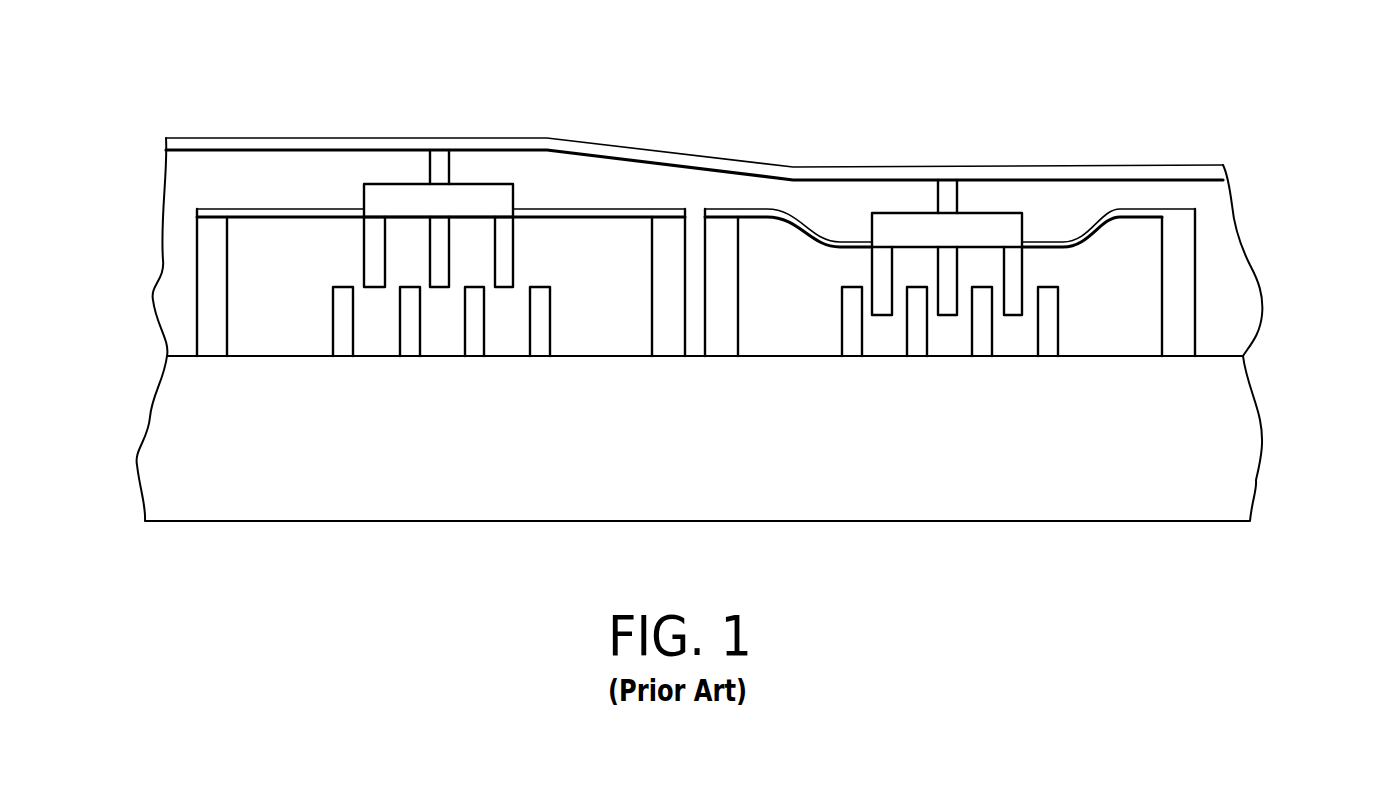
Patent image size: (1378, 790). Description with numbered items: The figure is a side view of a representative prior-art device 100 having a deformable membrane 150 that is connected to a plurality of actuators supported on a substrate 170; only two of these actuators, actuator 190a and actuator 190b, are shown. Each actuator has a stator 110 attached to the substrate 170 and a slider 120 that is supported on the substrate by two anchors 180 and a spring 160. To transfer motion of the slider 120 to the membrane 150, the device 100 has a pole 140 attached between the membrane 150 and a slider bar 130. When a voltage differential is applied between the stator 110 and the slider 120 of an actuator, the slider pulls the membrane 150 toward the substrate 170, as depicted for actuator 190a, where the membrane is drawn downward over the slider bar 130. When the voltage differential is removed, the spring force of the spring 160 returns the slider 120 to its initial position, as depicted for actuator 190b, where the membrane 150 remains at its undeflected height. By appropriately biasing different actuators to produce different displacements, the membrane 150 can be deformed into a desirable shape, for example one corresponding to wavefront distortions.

The device 100 is at (1372, 175).
The stator 110 is at (343, 357).
The slider 120 is at (511, 258).
The slider bar 130 is at (398, 184).
The pole 140 is at (449, 165).
The deformable membrane 150 is at (650, 149).
The spring 160 is at (312, 216).
The substrate 170 is at (148, 417).
The anchors 180 is at (197, 292).
The actuator 190a is at (958, 378).
The actuator 190b is at (466, 378).